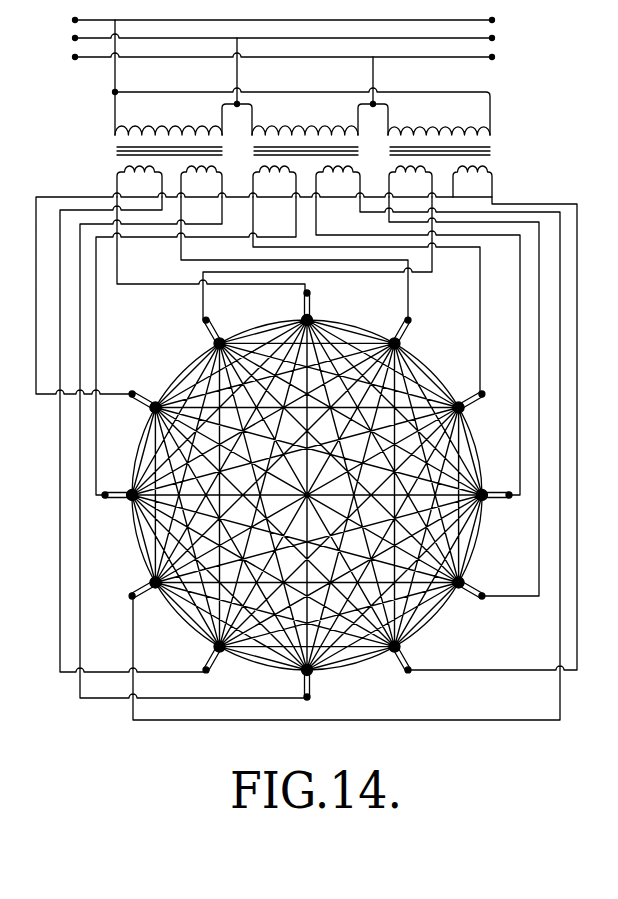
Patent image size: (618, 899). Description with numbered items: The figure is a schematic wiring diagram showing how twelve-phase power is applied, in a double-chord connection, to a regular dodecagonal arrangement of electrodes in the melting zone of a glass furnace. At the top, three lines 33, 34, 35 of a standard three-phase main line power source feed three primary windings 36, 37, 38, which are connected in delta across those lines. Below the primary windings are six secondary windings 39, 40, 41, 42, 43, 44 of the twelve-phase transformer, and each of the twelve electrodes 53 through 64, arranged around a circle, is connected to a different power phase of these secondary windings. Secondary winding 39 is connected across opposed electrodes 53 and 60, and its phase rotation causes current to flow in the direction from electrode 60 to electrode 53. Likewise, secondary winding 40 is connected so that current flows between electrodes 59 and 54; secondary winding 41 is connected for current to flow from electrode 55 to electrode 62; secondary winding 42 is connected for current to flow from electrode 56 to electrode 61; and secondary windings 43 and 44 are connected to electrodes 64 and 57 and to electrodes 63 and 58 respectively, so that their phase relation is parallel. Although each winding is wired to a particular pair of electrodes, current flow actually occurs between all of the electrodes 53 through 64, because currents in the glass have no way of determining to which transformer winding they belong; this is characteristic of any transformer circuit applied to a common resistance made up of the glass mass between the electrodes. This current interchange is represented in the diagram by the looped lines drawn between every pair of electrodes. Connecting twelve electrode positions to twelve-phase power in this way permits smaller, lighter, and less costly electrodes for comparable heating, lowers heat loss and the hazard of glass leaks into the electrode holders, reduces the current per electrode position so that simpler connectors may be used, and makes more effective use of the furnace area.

The line 33 is at (73, 19).
The line 34 is at (73, 37).
The line 35 is at (73, 56).
The primary winding 36 is at (186, 126).
The primary winding 37 is at (320, 126).
The primary winding 38 is at (454, 126).
The secondary winding 39 is at (150, 176).
The secondary winding 40 is at (212, 176).
The secondary winding 41 is at (285, 176).
The secondary winding 42 is at (349, 176).
The secondary winding 43 is at (421, 176).
The secondary winding 44 is at (483, 176).
The electrode 53 is at (307, 306).
The electrode 54 is at (402, 331).
The electrode 55 is at (471, 400).
The electrode 56 is at (496, 495).
The electrode 57 is at (471, 590).
The electrode 58 is at (402, 659).
The electrode 59 is at (307, 684).
The electrode 60 is at (213, 659).
The electrode 61 is at (143, 590).
The electrode 62 is at (118, 495).
The electrode 63 is at (143, 400).
The electrode 64 is at (207, 331).